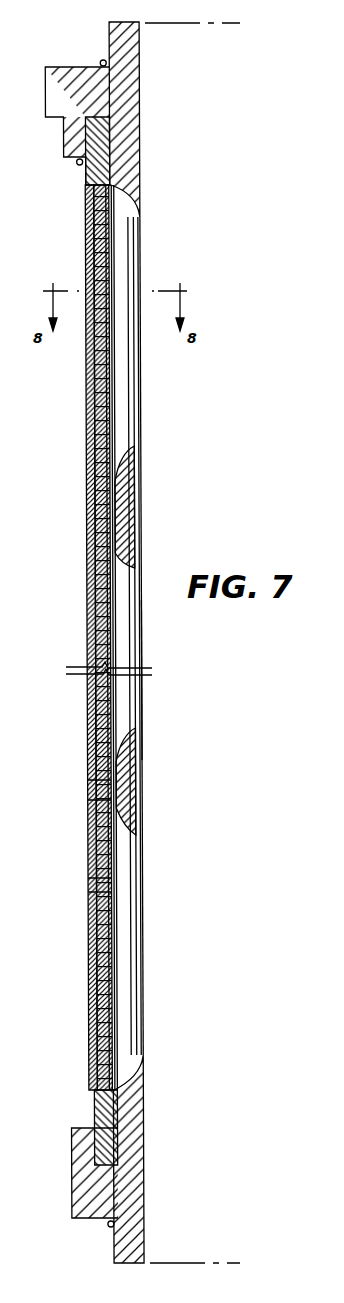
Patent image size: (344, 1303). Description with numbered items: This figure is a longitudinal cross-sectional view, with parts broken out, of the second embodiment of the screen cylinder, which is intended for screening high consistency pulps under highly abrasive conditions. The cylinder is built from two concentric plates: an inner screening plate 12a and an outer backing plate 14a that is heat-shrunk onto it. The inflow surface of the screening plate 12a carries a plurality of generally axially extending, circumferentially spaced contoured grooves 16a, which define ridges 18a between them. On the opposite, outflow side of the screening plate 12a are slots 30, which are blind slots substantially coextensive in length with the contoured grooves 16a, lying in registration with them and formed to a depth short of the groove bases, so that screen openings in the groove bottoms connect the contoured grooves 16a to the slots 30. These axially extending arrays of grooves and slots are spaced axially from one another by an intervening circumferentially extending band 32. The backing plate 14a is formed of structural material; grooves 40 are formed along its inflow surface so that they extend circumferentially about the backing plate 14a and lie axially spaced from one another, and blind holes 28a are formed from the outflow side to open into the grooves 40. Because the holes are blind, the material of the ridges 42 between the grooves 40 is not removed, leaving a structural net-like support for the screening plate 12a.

The screening plate 12a is at (139, 143).
The backing plate 14a is at (85, 433).
The contoured grooves 16a is at (137, 355).
The ridges 18a is at (145, 692).
The blind holes 28a is at (90, 790).
The slots 30 is at (125, 388).
The circumferentially extending band 32 is at (125, 515).
The grooves 40 is at (107, 837).
The ridges 42 is at (105, 885).